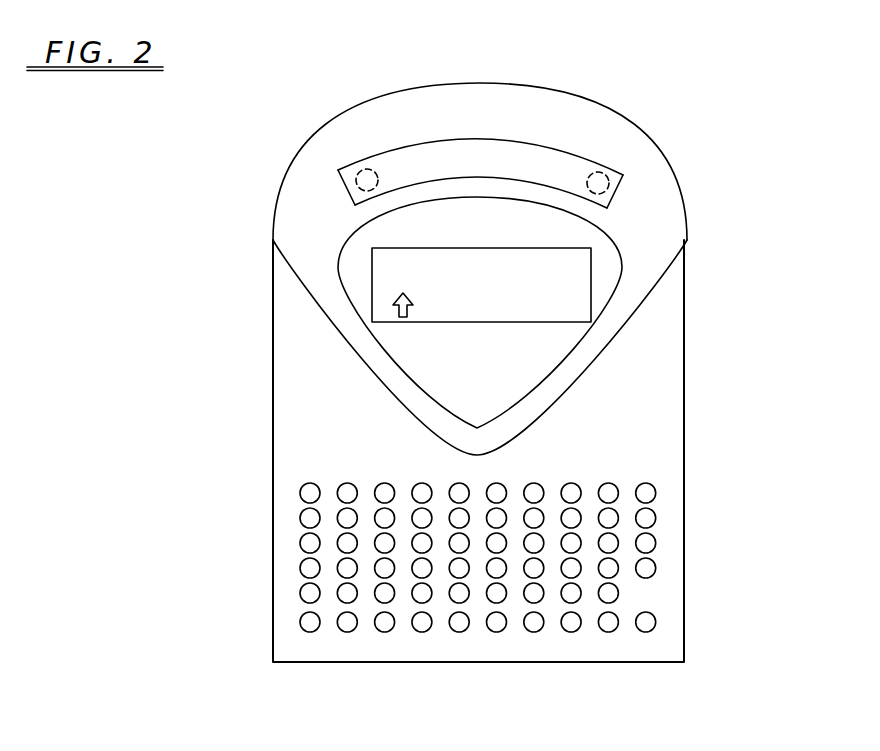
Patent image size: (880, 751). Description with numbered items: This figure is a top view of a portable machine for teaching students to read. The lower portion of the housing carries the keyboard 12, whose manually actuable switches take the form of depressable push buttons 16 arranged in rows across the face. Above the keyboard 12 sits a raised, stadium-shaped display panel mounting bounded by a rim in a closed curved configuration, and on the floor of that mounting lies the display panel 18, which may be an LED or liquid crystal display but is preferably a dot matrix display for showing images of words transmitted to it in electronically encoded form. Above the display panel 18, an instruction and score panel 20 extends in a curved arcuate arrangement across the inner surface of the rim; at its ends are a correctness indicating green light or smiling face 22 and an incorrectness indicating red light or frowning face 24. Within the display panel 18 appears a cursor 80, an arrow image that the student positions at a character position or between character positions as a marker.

The keyboard 12 is at (665, 587).
The push buttons 16 is at (615, 481).
The display panel 18 is at (591, 272).
The instruction and score panel 20 is at (522, 137).
The correctness indicating green light or smiling face 22 is at (362, 168).
The incorrectness indicating red light or frowning face 24 is at (602, 170).
The cursor 80 is at (397, 300).